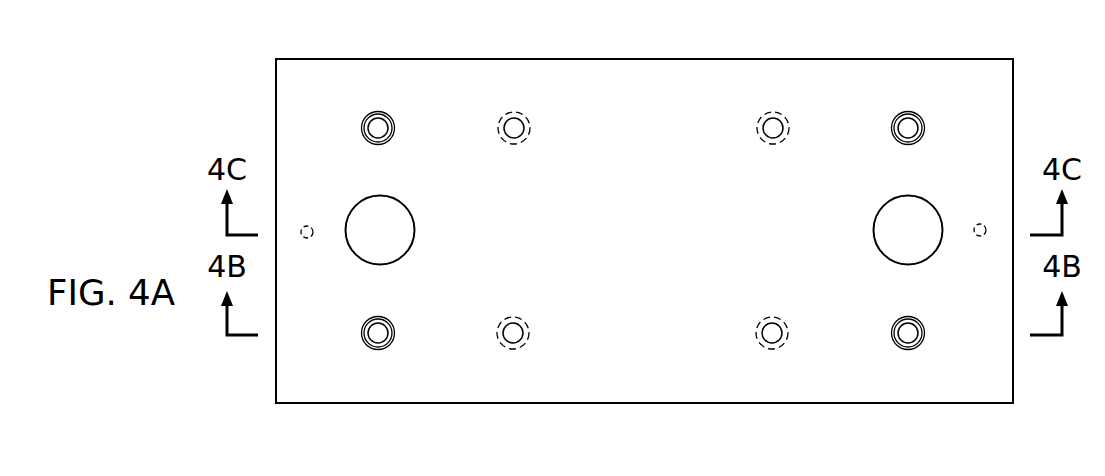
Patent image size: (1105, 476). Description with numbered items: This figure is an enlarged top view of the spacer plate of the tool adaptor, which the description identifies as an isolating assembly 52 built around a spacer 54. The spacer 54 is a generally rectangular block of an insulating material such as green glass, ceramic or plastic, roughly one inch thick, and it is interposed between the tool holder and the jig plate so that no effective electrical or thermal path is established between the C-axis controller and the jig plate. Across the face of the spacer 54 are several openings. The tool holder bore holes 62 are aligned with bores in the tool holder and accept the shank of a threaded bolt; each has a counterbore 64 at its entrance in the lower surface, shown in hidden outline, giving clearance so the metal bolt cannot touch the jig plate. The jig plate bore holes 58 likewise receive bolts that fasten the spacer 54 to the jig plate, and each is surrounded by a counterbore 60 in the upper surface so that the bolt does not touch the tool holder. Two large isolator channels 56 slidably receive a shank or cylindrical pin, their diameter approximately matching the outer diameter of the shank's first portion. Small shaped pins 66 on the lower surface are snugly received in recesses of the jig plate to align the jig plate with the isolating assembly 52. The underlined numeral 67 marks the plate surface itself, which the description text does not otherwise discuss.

The isolating assembly 52 is at (260, 121).
The spacer 54 is at (700, 397).
The isolator channel 56 is at (368, 201).
The jig plate bore hole 58 is at (370, 125).
The counterbore 60 is at (393, 137).
The tool holder bore hole 62 is at (515, 118).
The counterbore 64 is at (528, 122).
The small shaped pin 66 is at (306, 240).
The plate surface 67 is at (627, 299).